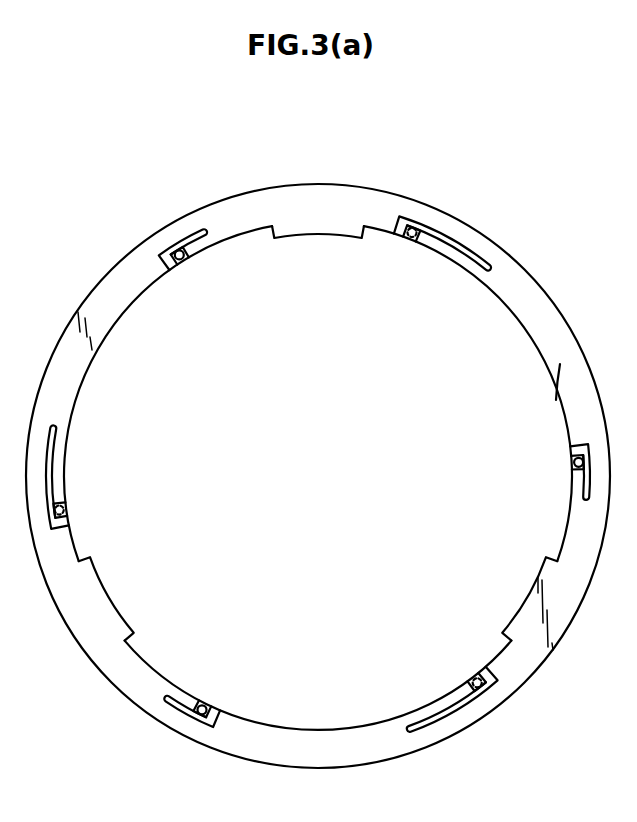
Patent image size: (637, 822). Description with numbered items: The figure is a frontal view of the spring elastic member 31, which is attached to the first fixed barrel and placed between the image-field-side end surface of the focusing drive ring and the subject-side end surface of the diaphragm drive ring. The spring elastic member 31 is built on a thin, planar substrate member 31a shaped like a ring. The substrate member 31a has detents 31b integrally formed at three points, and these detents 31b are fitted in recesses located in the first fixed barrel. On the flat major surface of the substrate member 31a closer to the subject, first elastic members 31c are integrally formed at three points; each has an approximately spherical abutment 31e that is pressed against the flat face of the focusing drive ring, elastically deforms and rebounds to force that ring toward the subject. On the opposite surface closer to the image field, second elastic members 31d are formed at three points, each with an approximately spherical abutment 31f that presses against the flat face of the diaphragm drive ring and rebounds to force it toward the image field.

The spring elastic member 31 is at (444, 184).
The substrate member 31a is at (568, 383).
The detent 31b is at (316, 238).
The first elastic member 31c is at (187, 247).
The second elastic member 31d is at (447, 245).
The abutment 31e is at (177, 263).
The abutment 31f is at (412, 238).